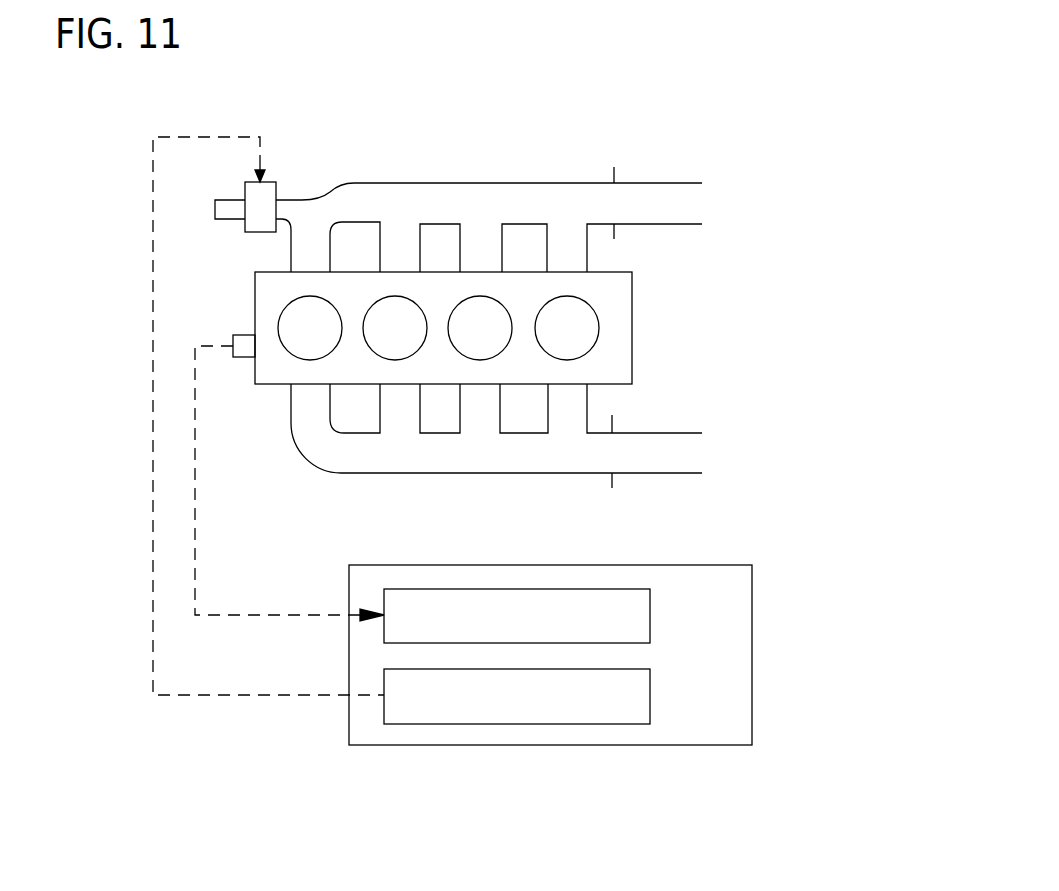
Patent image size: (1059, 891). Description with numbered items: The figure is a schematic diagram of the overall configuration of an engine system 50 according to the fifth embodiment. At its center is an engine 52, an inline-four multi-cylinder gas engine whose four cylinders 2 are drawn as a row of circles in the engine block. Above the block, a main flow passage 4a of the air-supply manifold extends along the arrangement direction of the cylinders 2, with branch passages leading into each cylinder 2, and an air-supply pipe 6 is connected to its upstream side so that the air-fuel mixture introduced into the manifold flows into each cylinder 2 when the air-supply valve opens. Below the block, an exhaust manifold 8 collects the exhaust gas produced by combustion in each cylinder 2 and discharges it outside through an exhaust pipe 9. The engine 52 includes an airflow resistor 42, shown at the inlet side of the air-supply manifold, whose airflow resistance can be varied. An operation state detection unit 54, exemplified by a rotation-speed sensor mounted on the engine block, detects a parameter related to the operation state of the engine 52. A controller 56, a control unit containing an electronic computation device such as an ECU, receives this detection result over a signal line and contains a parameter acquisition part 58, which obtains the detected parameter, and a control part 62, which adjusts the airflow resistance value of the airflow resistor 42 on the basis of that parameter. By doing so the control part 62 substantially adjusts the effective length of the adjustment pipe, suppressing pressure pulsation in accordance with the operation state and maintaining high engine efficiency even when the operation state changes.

The engine system 50 is at (803, 100).
The cylinder 2 is at (285, 303).
The engine 52 is at (663, 307).
The main flow passage 4a is at (438, 181).
The air-supply pipe 6 is at (665, 181).
The exhaust manifold 8 is at (437, 472).
The exhaust pipe 9 is at (675, 472).
The airflow resistor 42 is at (276, 190).
The operation state detection unit 54 is at (242, 356).
The controller 56 is at (750, 585).
The parameter acquisition part 58 is at (648, 612).
The control part 62 is at (648, 693).